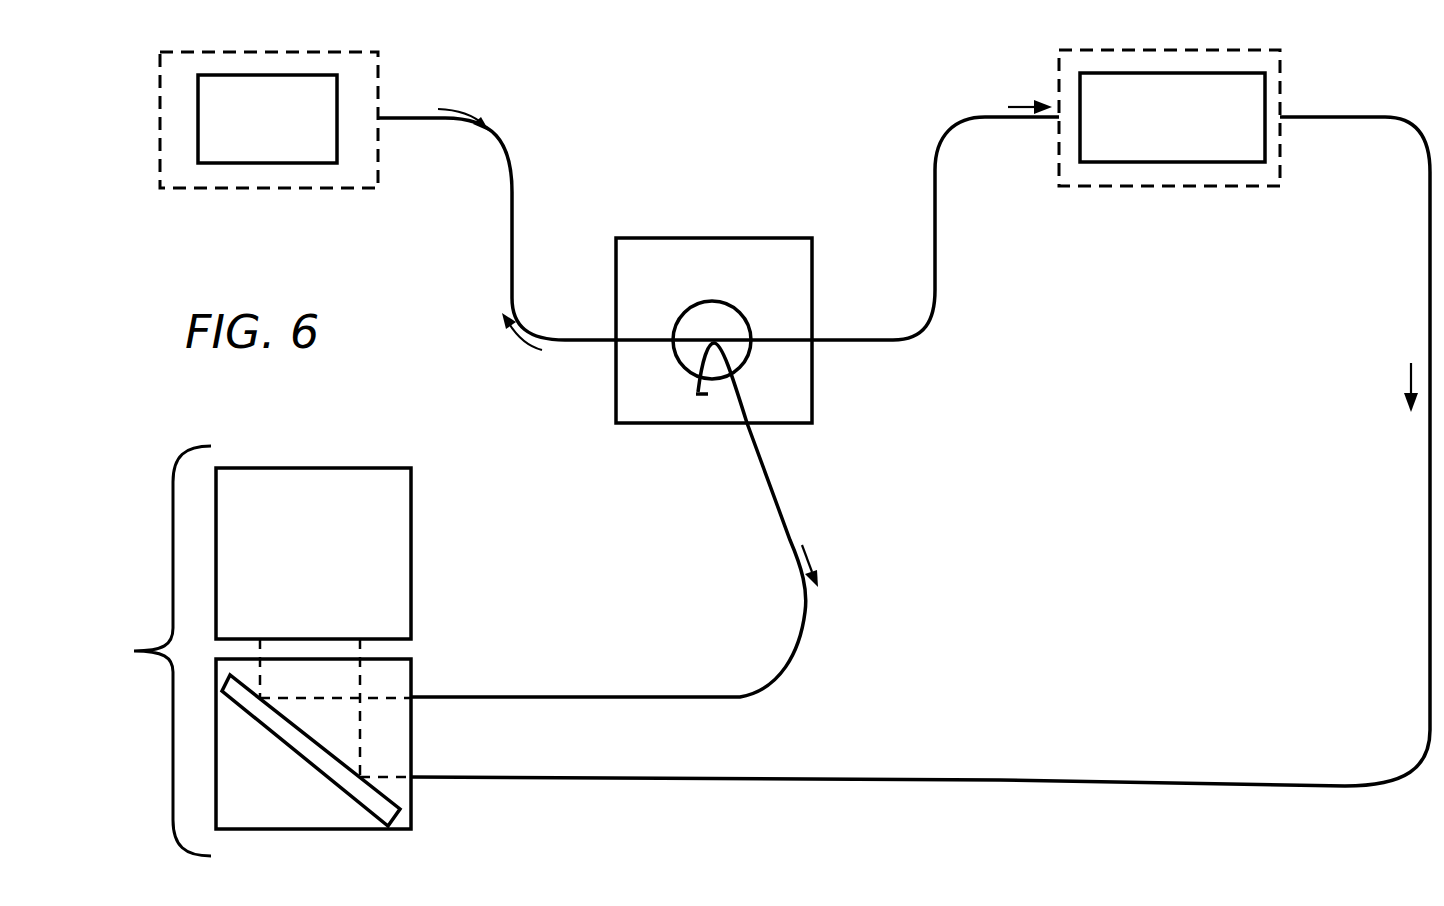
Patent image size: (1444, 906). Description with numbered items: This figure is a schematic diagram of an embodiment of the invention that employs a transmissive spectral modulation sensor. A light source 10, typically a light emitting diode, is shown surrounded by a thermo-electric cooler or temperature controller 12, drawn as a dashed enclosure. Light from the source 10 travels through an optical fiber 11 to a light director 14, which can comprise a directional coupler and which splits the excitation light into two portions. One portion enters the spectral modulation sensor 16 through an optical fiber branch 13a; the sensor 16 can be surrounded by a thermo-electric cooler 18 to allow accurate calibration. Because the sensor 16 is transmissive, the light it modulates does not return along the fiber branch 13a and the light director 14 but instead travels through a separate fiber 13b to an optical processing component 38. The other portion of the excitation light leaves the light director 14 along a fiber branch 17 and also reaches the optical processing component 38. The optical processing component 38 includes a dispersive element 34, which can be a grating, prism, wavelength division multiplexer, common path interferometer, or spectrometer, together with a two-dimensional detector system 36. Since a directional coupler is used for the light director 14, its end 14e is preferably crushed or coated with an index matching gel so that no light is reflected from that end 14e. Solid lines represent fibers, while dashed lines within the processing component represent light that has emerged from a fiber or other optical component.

The light source 10 is at (253, 75).
The temperature controller 12 is at (307, 188).
The optical fiber 11 is at (513, 187).
The light director 14 is at (697, 238).
The end 14e is at (700, 394).
The fiber branch 17 is at (773, 496).
The optical fiber branch 13a is at (930, 298).
The spectral modulation sensor 16 is at (1133, 162).
The thermo-electric cooler 18 is at (1215, 186).
The fiber 13b is at (800, 777).
The two-dimensional detector system 36 is at (251, 481).
The dispersive element 34 is at (412, 685).
The optical processing component 38 is at (155, 651).